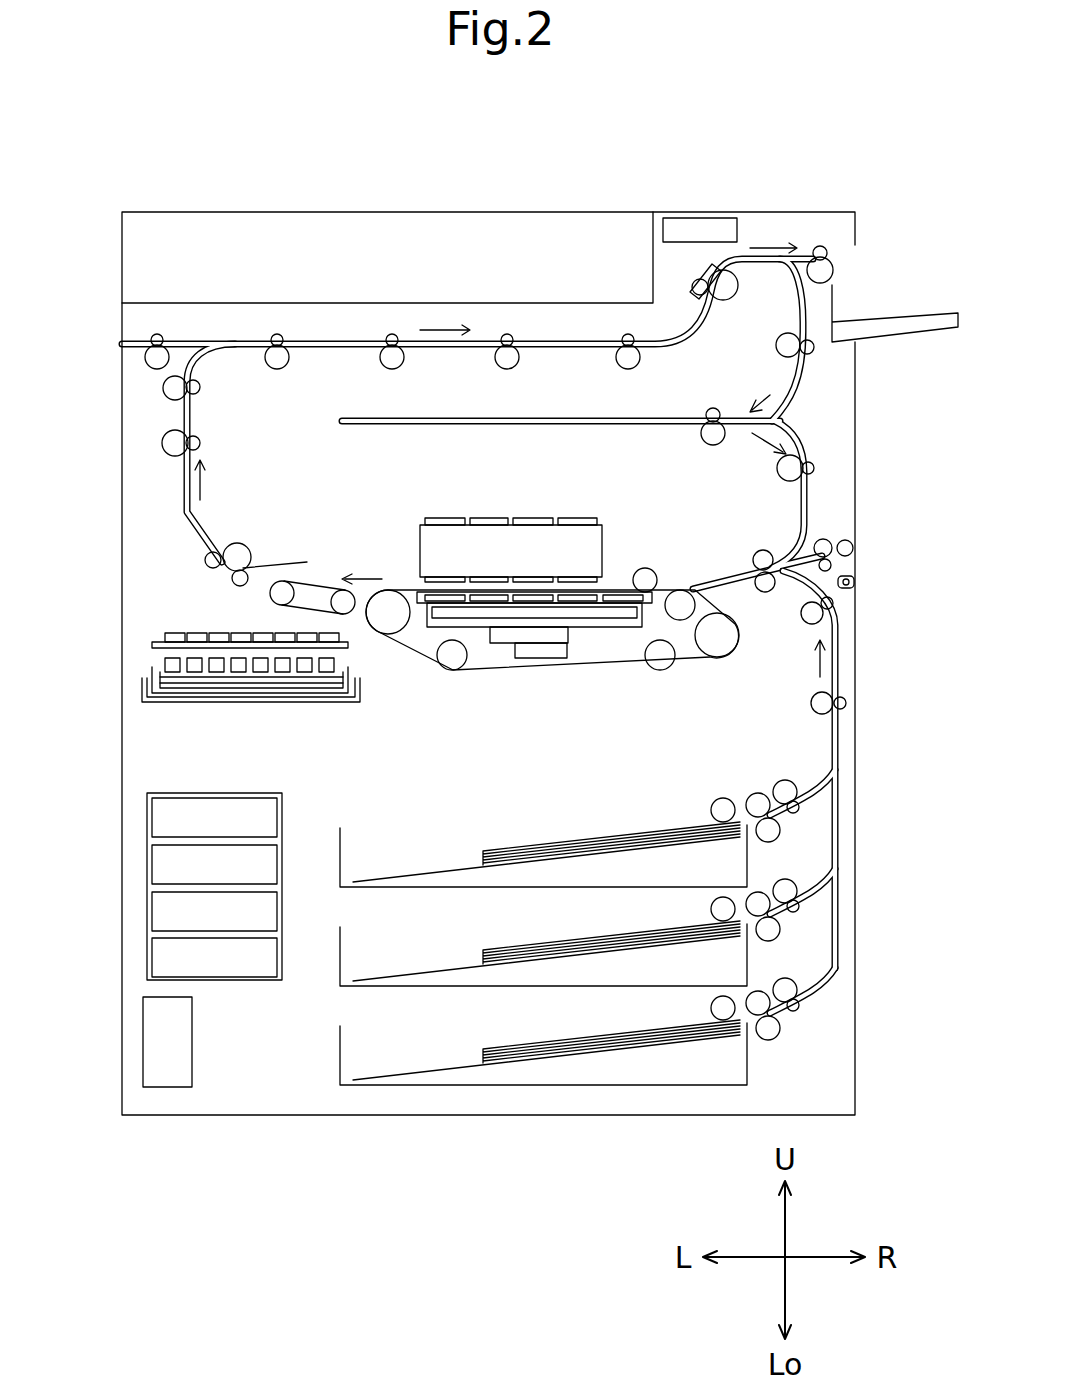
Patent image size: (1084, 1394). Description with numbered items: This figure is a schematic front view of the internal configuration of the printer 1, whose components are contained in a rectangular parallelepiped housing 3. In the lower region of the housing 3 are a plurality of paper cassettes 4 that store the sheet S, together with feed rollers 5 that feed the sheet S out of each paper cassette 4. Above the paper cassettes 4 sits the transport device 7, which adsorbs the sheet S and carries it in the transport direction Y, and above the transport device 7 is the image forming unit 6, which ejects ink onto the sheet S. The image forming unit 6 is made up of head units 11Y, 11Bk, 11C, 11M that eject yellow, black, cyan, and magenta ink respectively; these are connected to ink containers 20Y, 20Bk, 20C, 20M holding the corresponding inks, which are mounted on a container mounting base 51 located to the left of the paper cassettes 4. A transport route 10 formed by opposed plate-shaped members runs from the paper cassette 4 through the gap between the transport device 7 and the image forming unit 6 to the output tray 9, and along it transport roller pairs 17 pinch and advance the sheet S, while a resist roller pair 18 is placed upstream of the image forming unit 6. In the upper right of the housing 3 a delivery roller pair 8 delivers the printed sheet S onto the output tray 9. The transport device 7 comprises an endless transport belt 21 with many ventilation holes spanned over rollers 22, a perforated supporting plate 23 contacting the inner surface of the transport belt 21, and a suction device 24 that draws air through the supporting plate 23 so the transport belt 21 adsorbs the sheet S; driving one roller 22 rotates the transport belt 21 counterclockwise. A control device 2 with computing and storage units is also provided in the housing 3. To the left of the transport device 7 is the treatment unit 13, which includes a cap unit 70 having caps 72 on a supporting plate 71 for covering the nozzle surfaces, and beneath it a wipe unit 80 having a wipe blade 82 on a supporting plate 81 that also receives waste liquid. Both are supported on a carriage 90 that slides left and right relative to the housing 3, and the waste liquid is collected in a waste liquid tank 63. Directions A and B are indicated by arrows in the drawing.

The printer 1 is at (126, 123).
The control device 2 is at (703, 215).
The housing 3 is at (120, 497).
The paper cassette 4 is at (577, 932).
The feed roller 5 is at (711, 810).
The image forming unit 6 is at (620, 492).
The transport device 7 is at (569, 648).
The delivery roller pair 8 is at (835, 270).
The output tray 9 is at (905, 318).
The transport route 10 is at (225, 349).
The head unit 11M is at (433, 518).
The head unit 11C is at (478, 518).
The head unit 11Bk is at (527, 518).
The head unit 11Y is at (572, 518).
The treatment unit 13 is at (201, 661).
The transport roller pair 17 is at (812, 708).
The resist roller pair 18 is at (760, 550).
The ink container 20Y is at (145, 812).
The ink container 20Bk is at (145, 857).
The ink container 20C is at (145, 905).
The ink container 20M is at (145, 955).
The transport belt 21 is at (608, 673).
The roller 22 is at (395, 620).
The supporting plate 23 is at (597, 605).
The suction device 24 is at (504, 666).
The container mounting base 51 is at (173, 860).
The waste liquid tank 63 is at (140, 1010).
The cap unit 70 is at (217, 615).
The supporting plate 71 is at (160, 637).
The cap 72 is at (178, 634).
The wipe unit 80 is at (217, 691).
The supporting plate 81 is at (165, 698).
The wipe blade 82 is at (180, 694).
The carriage 90 is at (223, 684).
The direction A is at (289, 558).
The direction B is at (264, 588).
The transport direction Y is at (610, 592).
The sheet S is at (577, 932).